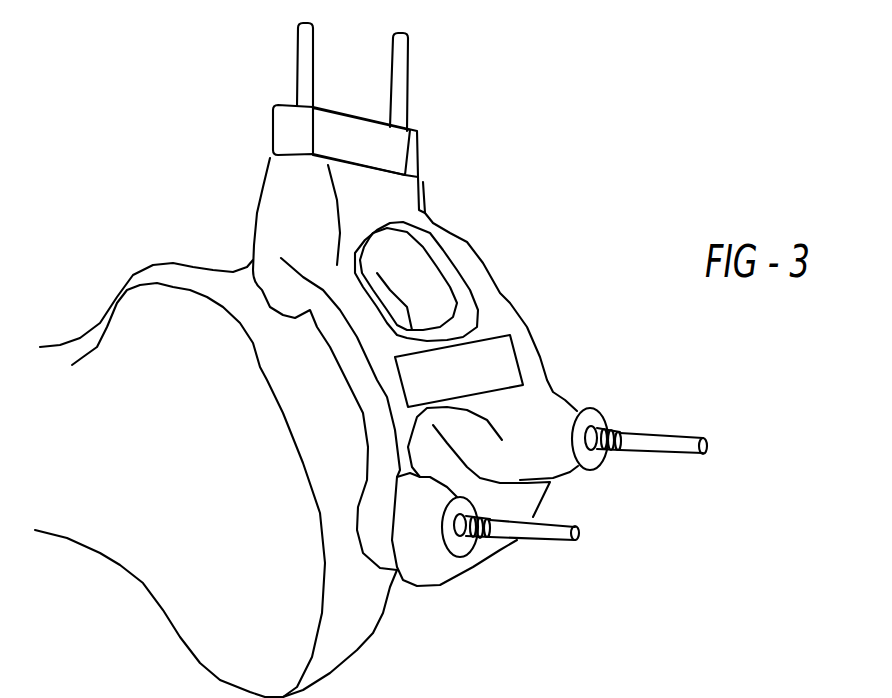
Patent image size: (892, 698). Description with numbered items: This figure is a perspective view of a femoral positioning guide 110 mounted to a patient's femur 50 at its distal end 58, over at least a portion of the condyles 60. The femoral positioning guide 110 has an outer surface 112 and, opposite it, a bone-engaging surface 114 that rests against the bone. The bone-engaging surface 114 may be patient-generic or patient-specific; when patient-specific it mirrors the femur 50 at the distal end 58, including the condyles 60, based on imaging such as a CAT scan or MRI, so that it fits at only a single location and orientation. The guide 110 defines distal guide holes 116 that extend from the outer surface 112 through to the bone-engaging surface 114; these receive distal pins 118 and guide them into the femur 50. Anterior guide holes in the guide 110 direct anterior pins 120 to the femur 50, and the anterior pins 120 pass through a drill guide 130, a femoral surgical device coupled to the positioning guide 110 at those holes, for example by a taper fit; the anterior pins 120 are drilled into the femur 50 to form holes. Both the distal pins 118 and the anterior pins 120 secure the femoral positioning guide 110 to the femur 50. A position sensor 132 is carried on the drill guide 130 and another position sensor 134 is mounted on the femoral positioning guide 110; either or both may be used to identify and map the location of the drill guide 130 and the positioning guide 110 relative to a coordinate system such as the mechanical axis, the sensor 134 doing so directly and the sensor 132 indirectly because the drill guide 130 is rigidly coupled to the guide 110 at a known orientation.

The femur 50 is at (158, 538).
The distal end 58 is at (340, 660).
The condyles 60 is at (373, 623).
The femoral positioning guide 110 is at (452, 240).
The outer surface 112 is at (497, 308).
The bone-engaging surface 114 is at (280, 316).
The distal guide holes 116 is at (592, 427).
The distal pins 118 is at (707, 448).
The anterior pins 120 is at (297, 57).
The drill guide 130 is at (418, 147).
The position sensor 132 is at (323, 128).
The position sensor 134 is at (503, 367).